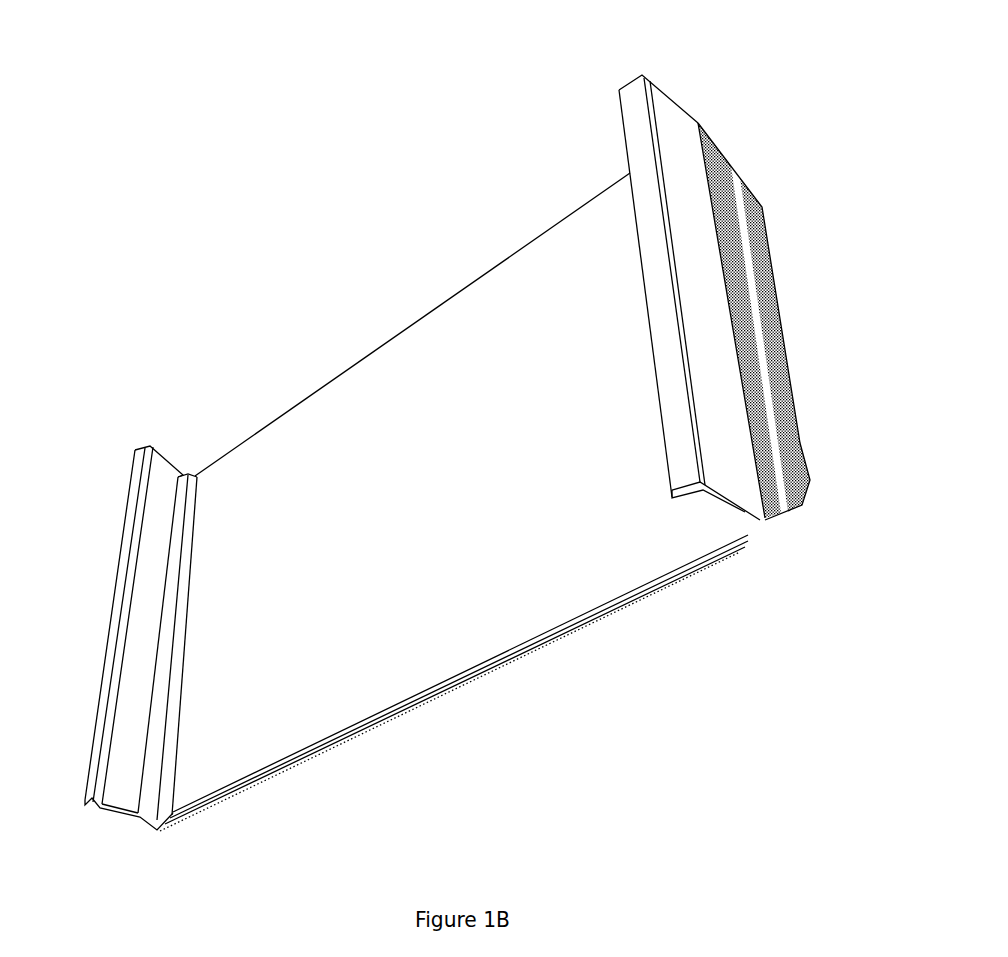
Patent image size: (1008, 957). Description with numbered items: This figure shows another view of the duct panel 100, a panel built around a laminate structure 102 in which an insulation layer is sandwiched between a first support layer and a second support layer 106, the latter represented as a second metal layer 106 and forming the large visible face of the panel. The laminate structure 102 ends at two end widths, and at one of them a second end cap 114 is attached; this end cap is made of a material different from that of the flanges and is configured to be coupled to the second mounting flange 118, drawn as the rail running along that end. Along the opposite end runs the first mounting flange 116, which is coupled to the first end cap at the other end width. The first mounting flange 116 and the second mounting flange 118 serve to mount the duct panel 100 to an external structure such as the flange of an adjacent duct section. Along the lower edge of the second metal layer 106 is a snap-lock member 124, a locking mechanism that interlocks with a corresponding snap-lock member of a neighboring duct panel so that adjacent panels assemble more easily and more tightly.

The duct panel 100 is at (730, 751).
The laminate structure 102 is at (460, 418).
The second support layer 106 is at (382, 368).
The second end cap 114 is at (770, 423).
The first mounting flange 116 is at (138, 630).
The second mounting flange 118 is at (748, 262).
The snap-lock member 124 is at (497, 658).